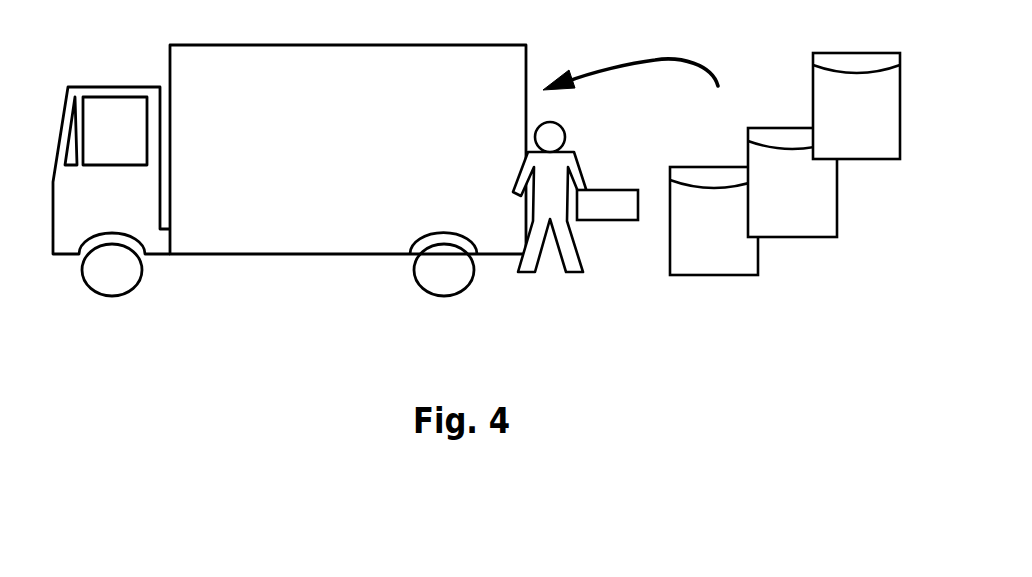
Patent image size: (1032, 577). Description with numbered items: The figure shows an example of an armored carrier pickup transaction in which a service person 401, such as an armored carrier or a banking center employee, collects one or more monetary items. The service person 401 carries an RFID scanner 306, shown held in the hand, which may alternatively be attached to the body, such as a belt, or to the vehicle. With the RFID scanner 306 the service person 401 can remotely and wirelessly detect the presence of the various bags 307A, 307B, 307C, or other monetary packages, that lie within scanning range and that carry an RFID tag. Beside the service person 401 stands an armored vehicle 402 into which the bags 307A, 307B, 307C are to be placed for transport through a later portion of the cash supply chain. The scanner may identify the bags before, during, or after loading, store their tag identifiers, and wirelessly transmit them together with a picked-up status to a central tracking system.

The armored vehicle 402 is at (289, 170).
The service person 401 is at (550, 242).
The RFID scanner 306 is at (607, 205).
The bag 307A is at (856, 106).
The bag 307B is at (792, 182).
The bag 307C is at (714, 221).